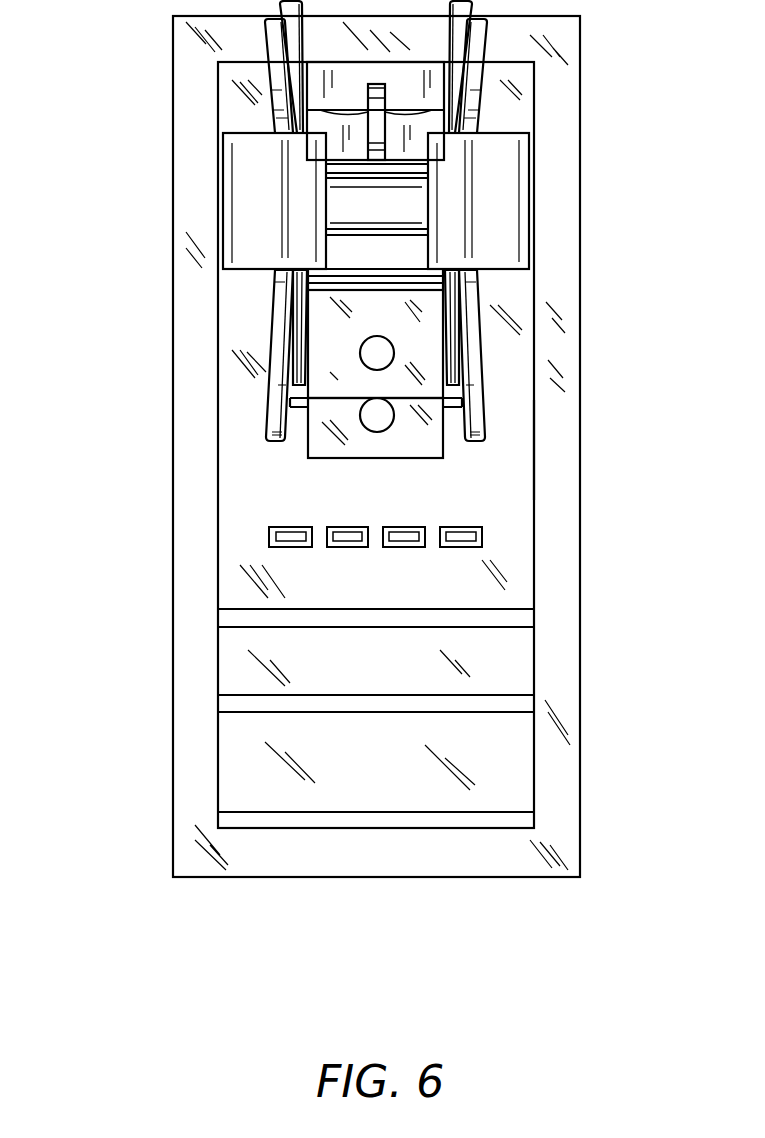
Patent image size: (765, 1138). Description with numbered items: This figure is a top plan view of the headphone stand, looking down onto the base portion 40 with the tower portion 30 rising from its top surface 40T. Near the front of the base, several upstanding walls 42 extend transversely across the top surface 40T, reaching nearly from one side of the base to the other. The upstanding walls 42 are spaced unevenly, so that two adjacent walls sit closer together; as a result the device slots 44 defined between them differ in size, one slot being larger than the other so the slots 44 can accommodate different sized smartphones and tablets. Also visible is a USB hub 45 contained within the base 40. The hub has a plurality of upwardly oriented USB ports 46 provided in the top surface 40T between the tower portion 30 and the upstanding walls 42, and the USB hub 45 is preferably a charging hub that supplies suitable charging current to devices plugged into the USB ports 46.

The tower portion 30 is at (478, 295).
The base portion 40 is at (580, 515).
The top surface 40T is at (517, 472).
The upstanding walls 42 is at (240, 627).
The device slots 44 is at (607, 815).
The USB hub 45 is at (534, 567).
The USB ports 46 is at (328, 548).